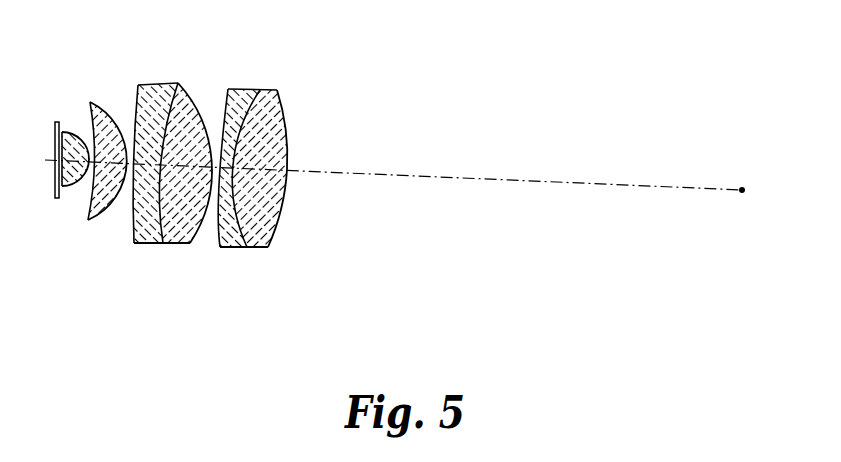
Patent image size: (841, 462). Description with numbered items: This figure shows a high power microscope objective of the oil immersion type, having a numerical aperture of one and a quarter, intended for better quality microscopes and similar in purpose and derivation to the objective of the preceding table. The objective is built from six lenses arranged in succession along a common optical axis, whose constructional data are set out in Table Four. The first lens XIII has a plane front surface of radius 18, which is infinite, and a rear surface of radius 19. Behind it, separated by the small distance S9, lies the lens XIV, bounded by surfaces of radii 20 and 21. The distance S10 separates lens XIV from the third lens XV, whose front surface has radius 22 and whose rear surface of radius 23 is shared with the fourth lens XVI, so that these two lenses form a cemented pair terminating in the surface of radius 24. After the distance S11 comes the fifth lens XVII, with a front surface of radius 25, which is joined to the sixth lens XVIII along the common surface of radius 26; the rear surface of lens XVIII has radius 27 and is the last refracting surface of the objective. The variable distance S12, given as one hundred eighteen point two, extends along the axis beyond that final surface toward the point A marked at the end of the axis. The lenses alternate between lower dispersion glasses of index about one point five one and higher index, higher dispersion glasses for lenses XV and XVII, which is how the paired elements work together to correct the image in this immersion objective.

The radius R18 18 is at (55, 177).
The radius R19 19 is at (66, 188).
The radius R20 20 is at (88, 222).
The radius R21 21 is at (97, 222).
The radius R22 22 is at (134, 243).
The radius R23 23 is at (163, 243).
The radius R24 24 is at (196, 240).
The radius R25 25 is at (221, 248).
The radius R26 26 is at (249, 247).
The radius R27 27 is at (278, 228).
The distance s9 S9 is at (108, 139).
The distance s10 S10 is at (136, 166).
The distance s11 S11 is at (213, 168).
The distance s12 S12 is at (440, 178).
The lens XIII is at (71, 135).
The lens XIV is at (93, 104).
The lens XV is at (156, 88).
The lens XVI is at (186, 95).
The lens XVII is at (261, 71).
The lens XVIII is at (315, 71).
The image point A on optical axis A is at (744, 189).